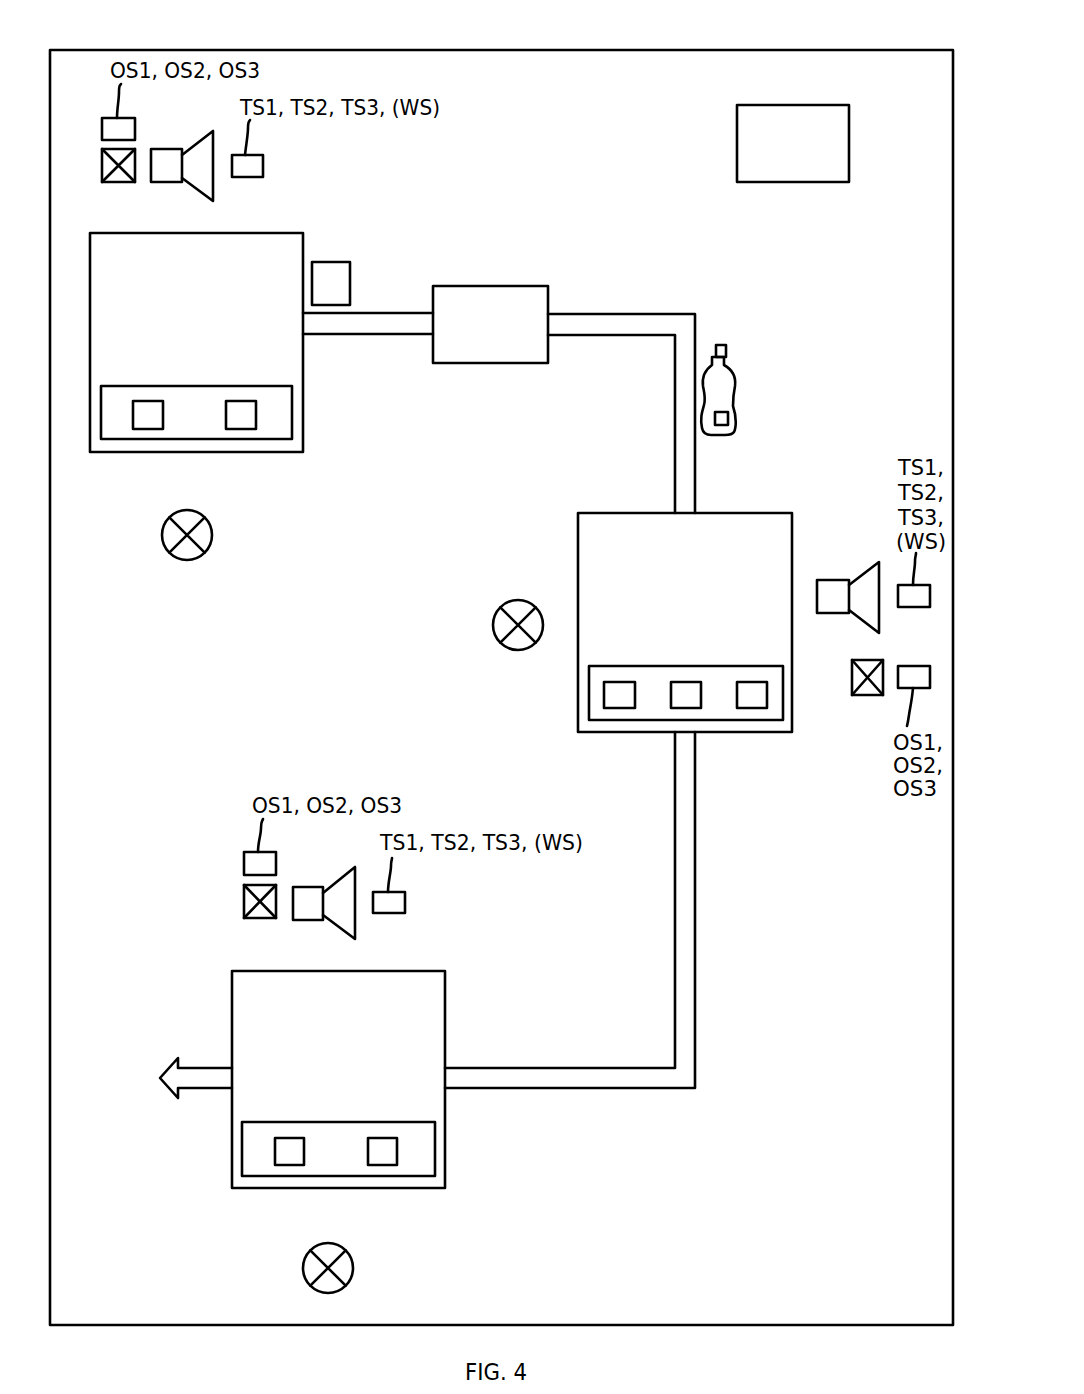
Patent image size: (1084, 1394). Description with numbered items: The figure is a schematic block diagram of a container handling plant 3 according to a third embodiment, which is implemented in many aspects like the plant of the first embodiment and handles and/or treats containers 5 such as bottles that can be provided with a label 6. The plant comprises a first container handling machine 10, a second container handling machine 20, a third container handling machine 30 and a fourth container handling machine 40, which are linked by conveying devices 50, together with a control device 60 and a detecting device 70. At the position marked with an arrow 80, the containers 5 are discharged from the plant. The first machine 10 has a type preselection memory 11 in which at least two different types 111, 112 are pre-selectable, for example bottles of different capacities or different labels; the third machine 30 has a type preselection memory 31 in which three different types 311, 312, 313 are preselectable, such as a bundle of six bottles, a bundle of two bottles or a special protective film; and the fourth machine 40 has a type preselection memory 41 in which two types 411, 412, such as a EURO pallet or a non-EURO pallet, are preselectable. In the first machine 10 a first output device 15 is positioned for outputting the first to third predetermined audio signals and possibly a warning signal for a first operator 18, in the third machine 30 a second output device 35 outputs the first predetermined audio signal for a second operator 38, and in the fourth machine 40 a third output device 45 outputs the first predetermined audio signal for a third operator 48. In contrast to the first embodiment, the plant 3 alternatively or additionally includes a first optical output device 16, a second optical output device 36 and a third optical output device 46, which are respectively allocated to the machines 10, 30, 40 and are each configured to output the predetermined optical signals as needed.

The container handling plant 3 is at (853, 50).
The control device 60 is at (838, 105).
The first container handling machine 10 is at (291, 233).
The detecting device 70 is at (340, 262).
The conveying devices 50 is at (358, 313).
The second container handling machine 20 is at (535, 286).
The type preselection memory 11 is at (292, 404).
The type 111 is at (148, 429).
The type 112 is at (241, 429).
The first output device 15 is at (196, 141).
The first optical output device 16 is at (102, 162).
The first operator 18 is at (162, 529).
The container 5 is at (734, 368).
The label 6 is at (728, 419).
The third container handling machine 30 is at (780, 513).
The type preselection memory 31 is at (589, 680).
The type 311 is at (620, 708).
The type 312 is at (686, 682).
The type 313 is at (752, 708).
The second output device 35 is at (858, 575).
The second optical output device 36 is at (867, 695).
The second operator 38 is at (493, 620).
The fourth container handling machine 40 is at (432, 971).
The type preselection memory 41 is at (435, 1140).
The type 411 is at (290, 1165).
The type 412 is at (383, 1165).
The third output device 45 is at (340, 870).
The third optical output device 46 is at (244, 899).
The third operator 48 is at (303, 1262).
The arrow 80 is at (203, 1068).